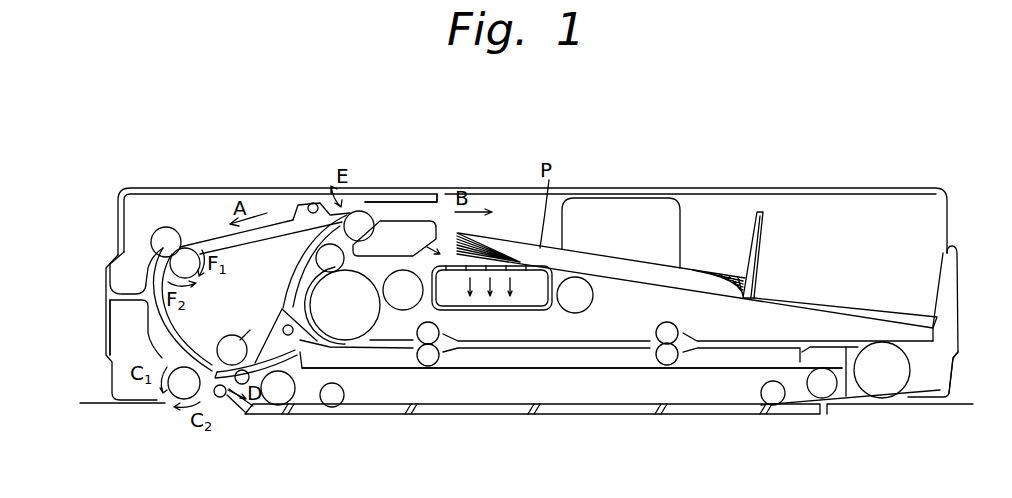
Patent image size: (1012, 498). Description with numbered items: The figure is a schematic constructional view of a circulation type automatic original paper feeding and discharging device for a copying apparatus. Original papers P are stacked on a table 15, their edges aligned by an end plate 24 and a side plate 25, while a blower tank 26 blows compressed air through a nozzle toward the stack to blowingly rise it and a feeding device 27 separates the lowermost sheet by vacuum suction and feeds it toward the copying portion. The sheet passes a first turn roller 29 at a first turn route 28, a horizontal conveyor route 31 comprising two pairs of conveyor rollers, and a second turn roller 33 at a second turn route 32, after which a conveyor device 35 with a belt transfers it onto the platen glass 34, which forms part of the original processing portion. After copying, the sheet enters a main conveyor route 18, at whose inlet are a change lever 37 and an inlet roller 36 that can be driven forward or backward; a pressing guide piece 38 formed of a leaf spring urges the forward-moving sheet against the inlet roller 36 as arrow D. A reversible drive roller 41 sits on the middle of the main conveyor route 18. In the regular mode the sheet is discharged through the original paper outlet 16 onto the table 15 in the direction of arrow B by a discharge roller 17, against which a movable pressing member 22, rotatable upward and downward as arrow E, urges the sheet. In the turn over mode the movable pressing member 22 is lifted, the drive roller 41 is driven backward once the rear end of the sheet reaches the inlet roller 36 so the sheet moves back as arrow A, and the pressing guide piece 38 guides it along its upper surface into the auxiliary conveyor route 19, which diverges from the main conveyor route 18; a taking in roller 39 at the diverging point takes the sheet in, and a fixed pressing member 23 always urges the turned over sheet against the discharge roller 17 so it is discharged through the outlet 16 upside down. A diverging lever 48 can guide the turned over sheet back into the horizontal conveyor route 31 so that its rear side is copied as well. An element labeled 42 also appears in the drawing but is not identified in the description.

The table 15 is at (805, 300).
The original paper outlet 16 is at (435, 212).
The discharge roller 17 is at (378, 219).
The main conveyor route 18 is at (148, 312).
The auxiliary conveyor route 19 is at (291, 265).
The movable pressing member 22 is at (326, 207).
The fixed pressing member 23 is at (365, 212).
The end plate 24 is at (762, 252).
The side plate 25 is at (618, 200).
The blower tank 26 is at (460, 240).
The feeding device 27 is at (602, 299).
The first turn route 28 is at (282, 310).
The first turn roller 29 is at (373, 318).
The horizontal conveyor route 31 is at (579, 358).
The second turn route 32 is at (913, 364).
The second turn roller 33 is at (880, 396).
The platen glass 34 is at (517, 410).
The conveyor device 35 is at (737, 359).
The inlet roller 36 is at (178, 395).
The change lever 37 is at (222, 403).
The pressing guide piece 38 is at (145, 335).
The taking in roller 39 is at (229, 328).
The drive roller 41 is at (167, 219).
The guide plate 42 is at (303, 372).
The diverging lever 48 is at (325, 345).